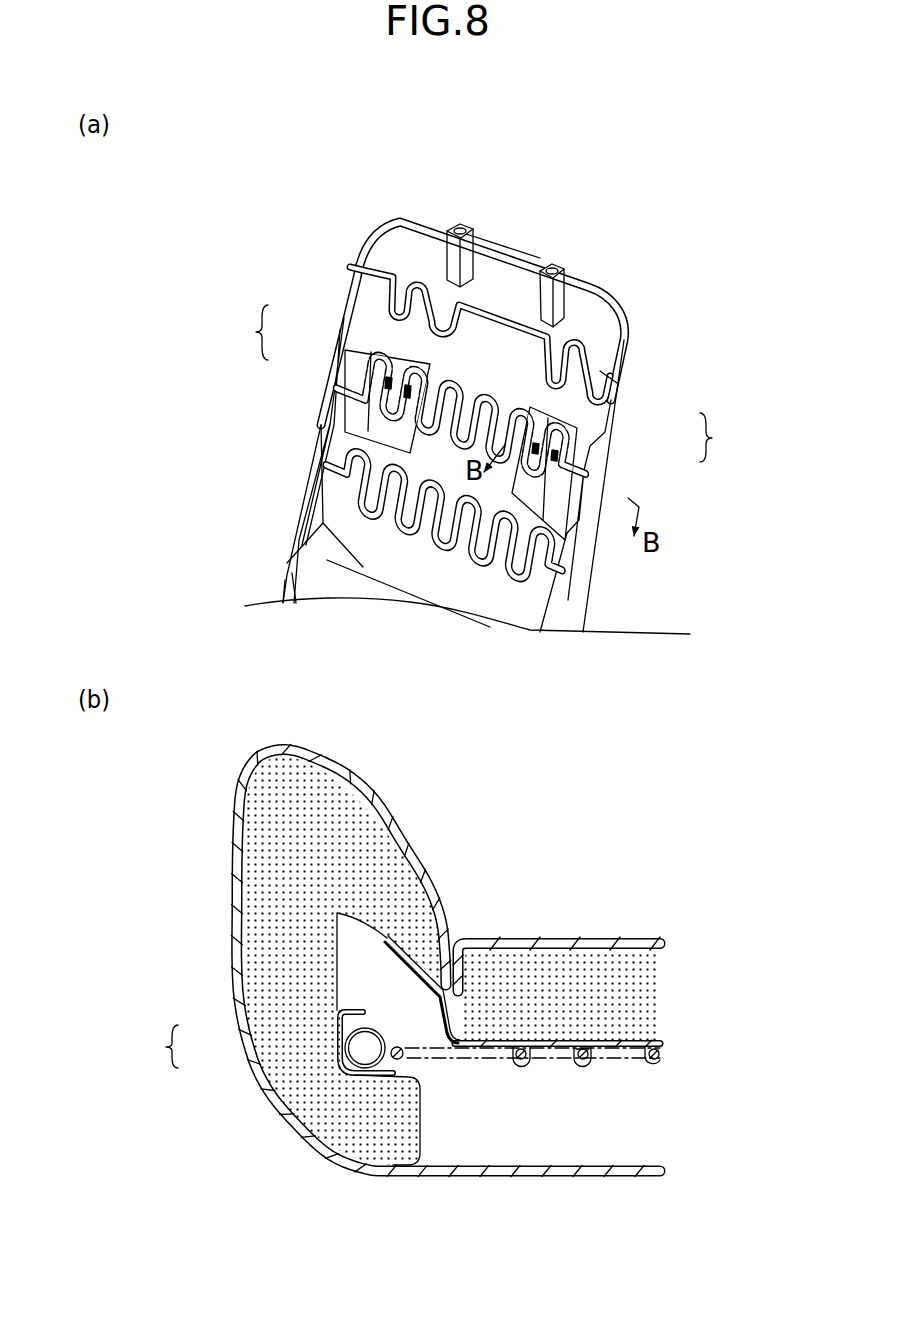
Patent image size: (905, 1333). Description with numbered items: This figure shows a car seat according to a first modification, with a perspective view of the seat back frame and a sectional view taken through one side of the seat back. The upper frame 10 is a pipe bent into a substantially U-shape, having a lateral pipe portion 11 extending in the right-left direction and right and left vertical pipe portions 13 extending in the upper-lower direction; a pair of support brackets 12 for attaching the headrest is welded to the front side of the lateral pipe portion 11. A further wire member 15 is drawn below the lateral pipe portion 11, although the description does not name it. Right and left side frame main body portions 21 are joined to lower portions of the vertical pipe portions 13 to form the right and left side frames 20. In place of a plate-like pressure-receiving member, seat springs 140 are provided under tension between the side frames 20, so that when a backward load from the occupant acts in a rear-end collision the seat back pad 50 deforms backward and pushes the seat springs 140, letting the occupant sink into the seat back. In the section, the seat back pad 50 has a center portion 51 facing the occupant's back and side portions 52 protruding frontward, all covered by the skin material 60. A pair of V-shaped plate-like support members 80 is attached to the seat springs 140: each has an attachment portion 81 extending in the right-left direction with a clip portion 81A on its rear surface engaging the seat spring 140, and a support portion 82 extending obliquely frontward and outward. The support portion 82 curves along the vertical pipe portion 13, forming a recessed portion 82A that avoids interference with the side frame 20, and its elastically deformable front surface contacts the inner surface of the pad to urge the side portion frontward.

The upper frame 10 is at (610, 295).
The lateral pipe portion 11 is at (516, 262).
The support bracket 12 is at (462, 227).
The vertical pipe portion 13 is at (357, 300).
The upper wire 15 is at (494, 303).
The side frame 20 is at (442, 686).
The side frame main body portion 21 is at (338, 364).
The seat back pad 50 is at (535, 943).
The center portion 51 is at (595, 965).
The side portion 52 is at (390, 857).
The skin material 60 is at (323, 773).
The support member 80 is at (332, 403).
The attachment portion 81 is at (545, 1052).
The clip portion 81A is at (585, 1064).
The support portion 82 is at (428, 1020).
The recessed portion 82A is at (412, 982).
The seat spring 140 is at (479, 380).